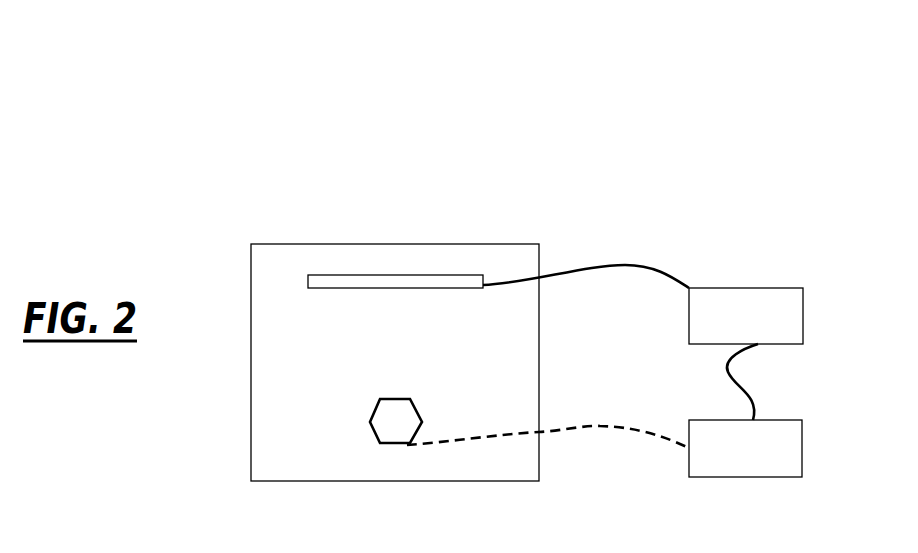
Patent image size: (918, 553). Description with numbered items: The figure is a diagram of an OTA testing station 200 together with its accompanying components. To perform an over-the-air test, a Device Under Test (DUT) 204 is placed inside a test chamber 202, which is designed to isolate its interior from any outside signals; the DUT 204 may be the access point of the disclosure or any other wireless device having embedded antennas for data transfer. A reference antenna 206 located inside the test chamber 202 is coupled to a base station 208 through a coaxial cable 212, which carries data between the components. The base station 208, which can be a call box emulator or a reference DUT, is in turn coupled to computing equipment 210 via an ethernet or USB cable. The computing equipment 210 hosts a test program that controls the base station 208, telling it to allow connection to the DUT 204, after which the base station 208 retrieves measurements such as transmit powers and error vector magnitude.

The OTA testing station 200 is at (566, 98).
The test chamber 202 is at (405, 244).
The Device Under Test (DUT) 204 is at (380, 443).
The reference antenna 206 is at (308, 283).
The base station 208 is at (783, 288).
The computing equipment 210 is at (783, 420).
The coaxial cable 212 is at (623, 263).